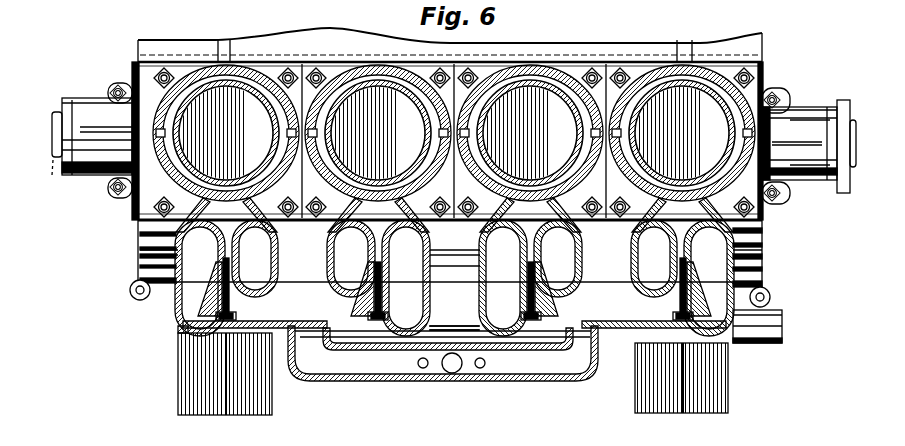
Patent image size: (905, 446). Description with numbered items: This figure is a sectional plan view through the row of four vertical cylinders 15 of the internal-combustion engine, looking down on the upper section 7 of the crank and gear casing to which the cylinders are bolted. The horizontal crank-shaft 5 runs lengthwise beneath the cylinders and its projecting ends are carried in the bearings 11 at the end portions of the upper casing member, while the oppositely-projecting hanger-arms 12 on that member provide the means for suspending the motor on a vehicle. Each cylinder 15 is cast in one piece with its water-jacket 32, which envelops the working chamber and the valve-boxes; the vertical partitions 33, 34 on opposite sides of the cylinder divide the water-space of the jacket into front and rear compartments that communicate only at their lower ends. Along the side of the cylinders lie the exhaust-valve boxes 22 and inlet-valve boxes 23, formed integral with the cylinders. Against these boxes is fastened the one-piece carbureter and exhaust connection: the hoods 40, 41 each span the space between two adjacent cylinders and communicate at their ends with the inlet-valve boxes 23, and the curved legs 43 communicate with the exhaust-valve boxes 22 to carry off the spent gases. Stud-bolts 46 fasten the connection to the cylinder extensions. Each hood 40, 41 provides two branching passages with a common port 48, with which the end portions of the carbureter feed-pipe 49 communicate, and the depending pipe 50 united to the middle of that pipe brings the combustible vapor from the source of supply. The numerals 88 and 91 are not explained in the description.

The crank-shaft 5 is at (53, 176).
The upper section of casing 7 is at (523, 56).
The bearings 11 is at (97, 175).
The hanger-arms 12 is at (262, 391).
The cylinders 15 is at (268, 70).
The exhaust-valve box 22 is at (137, 244).
The inlet-valve box 23 is at (282, 247).
The water-jacket 32 is at (268, 60).
The vertical partition 33 is at (606, 195).
The vertical partition 34 is at (762, 135).
The hood 40 is at (292, 268).
The hood 41 is at (600, 268).
The legs 43 is at (182, 330).
The stud-bolts 46 is at (210, 297).
The common opening or port 48 is at (454, 317).
The carbureter feed-pipe 49 is at (425, 367).
The depending pipe 50 is at (456, 371).
The base 88 is at (620, 445).
The base 91 is at (258, 445).